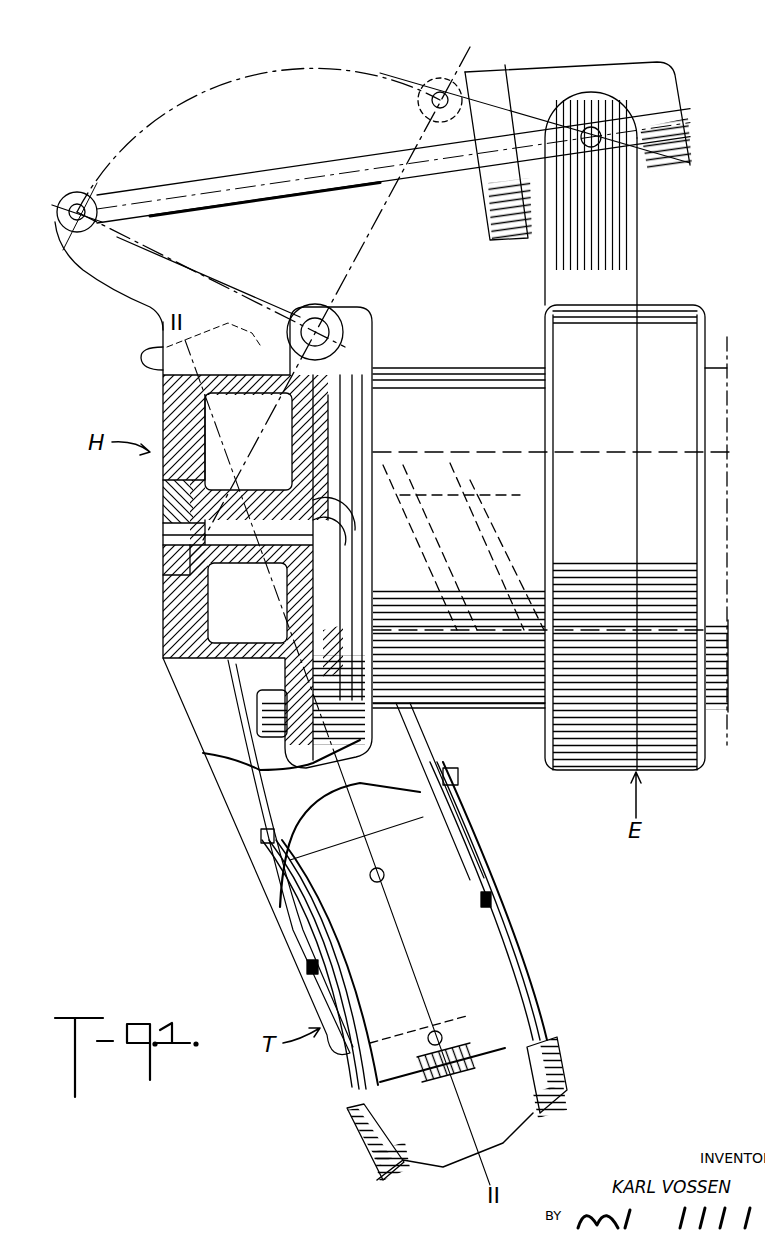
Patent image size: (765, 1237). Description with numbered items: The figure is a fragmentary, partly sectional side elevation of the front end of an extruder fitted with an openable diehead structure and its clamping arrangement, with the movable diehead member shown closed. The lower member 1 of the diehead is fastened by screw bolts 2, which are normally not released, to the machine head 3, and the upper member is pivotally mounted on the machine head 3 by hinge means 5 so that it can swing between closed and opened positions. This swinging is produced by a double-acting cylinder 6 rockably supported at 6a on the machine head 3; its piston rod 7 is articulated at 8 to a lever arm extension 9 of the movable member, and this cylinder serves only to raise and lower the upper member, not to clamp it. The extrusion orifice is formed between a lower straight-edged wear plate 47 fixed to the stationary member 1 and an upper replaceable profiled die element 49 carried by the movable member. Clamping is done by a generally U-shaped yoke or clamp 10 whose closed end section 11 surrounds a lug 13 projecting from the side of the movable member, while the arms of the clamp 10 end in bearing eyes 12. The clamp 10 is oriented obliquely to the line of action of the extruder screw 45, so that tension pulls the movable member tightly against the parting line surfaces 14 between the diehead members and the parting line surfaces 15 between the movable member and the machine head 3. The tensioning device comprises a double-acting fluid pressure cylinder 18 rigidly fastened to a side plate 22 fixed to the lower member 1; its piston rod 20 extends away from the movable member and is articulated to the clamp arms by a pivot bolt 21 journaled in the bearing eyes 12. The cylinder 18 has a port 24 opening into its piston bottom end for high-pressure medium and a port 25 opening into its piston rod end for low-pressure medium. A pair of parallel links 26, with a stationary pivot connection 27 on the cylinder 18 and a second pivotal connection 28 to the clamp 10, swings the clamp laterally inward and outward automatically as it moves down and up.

The lower member 1 is at (163, 625).
The screw bolts 2 is at (255, 722).
The machine head 3 is at (498, 704).
The hinge means 5 is at (345, 332).
The double-acting cylinder 6 is at (656, 188).
The rockable support 6a is at (597, 133).
The piston rod 7 is at (256, 180).
The articulation 8 is at (78, 203).
The lever arm extension 9 is at (98, 268).
The clamp 10 is at (268, 808).
The closed end section 11 is at (145, 368).
The bearing eyes 12 is at (530, 1040).
The lug 13 is at (228, 410).
The parting line surfaces 14 is at (225, 555).
The parting line surfaces 15 is at (322, 450).
The double-acting fluid pressure cylinder 18 is at (460, 958).
The piston rod 20 is at (445, 1072).
The pivot bolt 21 is at (560, 1052).
The side plate 22 is at (230, 778).
The port 24 is at (375, 883).
The port 25 is at (440, 1031).
The parallel links 26 is at (292, 912).
The stationary pivot connection 27 is at (262, 858).
The pivotal connection 28 is at (305, 960).
The extruder screw 45 is at (453, 470).
The wear plate 47 is at (163, 553).
The profiled die element 49 is at (163, 510).